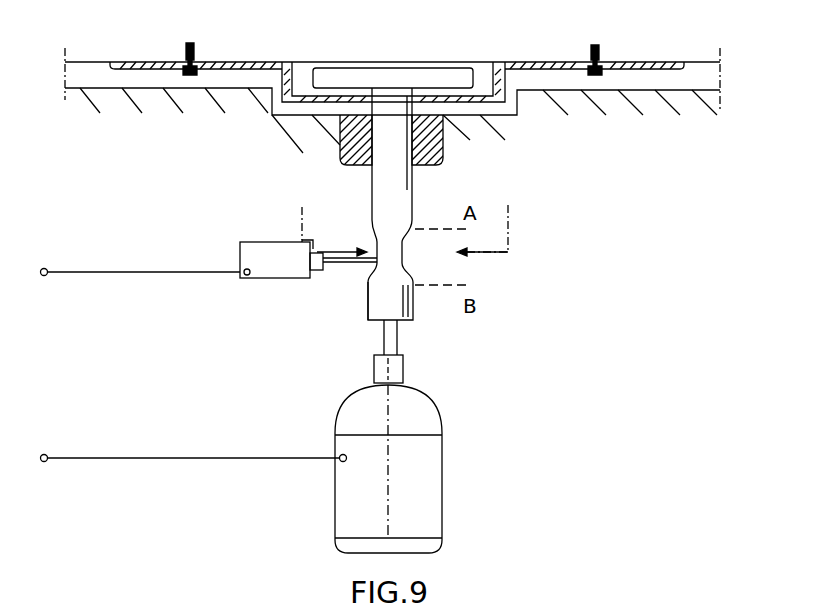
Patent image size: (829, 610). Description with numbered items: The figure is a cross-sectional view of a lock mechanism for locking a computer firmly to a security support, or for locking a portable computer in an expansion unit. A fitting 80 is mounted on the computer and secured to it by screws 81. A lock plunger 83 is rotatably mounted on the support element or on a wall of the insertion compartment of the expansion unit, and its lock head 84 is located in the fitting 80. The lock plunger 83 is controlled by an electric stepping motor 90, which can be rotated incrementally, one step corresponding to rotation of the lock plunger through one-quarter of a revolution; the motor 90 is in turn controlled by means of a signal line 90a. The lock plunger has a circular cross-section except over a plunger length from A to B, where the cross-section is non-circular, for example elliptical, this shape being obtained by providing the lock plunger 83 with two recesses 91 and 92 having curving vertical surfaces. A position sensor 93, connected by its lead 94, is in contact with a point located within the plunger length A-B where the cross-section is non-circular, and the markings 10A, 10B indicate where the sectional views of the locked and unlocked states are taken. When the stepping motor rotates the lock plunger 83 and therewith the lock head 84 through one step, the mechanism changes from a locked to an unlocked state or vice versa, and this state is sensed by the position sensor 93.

The fitting 80 is at (507, 60).
The screw 81 is at (191, 46).
The lock plunger 83 is at (407, 188).
The lock head 84 is at (355, 80).
The sensor unit 10A is at (312, 217).
The sensor unit 10B is at (515, 217).
The electric stepping motor 90 is at (441, 496).
The signal line 90a is at (192, 441).
The recess 91 is at (365, 278).
The recess 92 is at (412, 282).
The position sensor 93 is at (241, 242).
The lead wire 94 is at (139, 259).